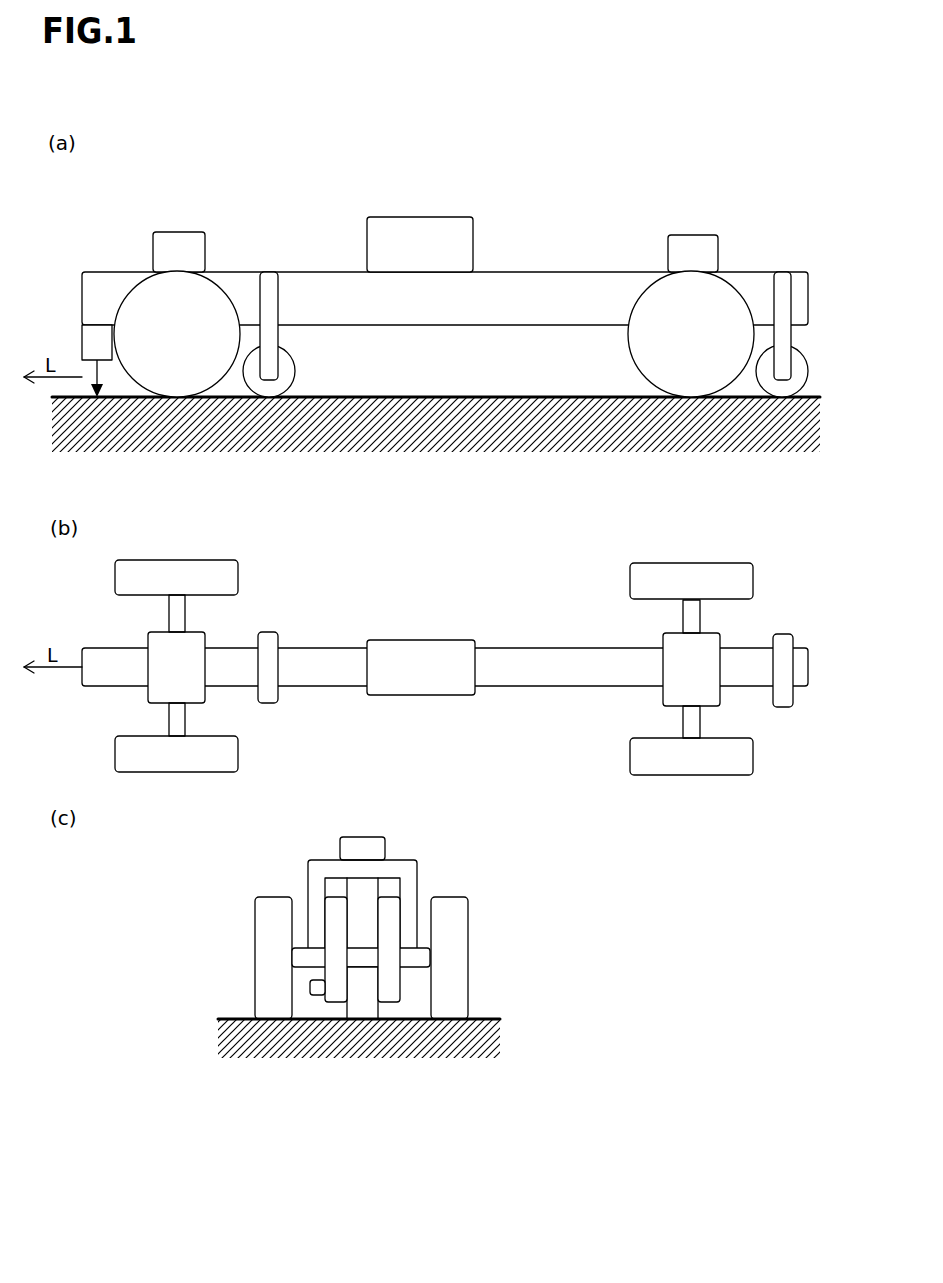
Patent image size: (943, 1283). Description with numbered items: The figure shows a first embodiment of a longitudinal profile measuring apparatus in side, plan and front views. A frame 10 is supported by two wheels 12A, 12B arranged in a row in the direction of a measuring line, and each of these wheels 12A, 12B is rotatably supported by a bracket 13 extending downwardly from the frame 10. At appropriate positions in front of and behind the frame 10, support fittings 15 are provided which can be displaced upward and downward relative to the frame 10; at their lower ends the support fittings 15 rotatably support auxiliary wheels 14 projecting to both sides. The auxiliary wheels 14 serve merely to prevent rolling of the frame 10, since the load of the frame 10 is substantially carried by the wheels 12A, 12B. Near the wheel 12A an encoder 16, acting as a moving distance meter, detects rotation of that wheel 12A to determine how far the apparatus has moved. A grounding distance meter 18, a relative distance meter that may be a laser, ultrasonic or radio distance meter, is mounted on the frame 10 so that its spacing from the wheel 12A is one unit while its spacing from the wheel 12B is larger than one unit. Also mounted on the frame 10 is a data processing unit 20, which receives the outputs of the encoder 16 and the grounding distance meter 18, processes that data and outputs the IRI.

The frame 10 is at (573, 278).
The wheel 12A is at (290, 370).
The wheel 12B is at (787, 387).
The bracket 13 is at (270, 322).
The auxiliary wheel 14 is at (165, 370).
The support fitting 15 is at (181, 232).
The encoder 16 is at (312, 987).
The grounding distance meter 18 is at (97, 338).
The data processing unit 20 is at (428, 217).